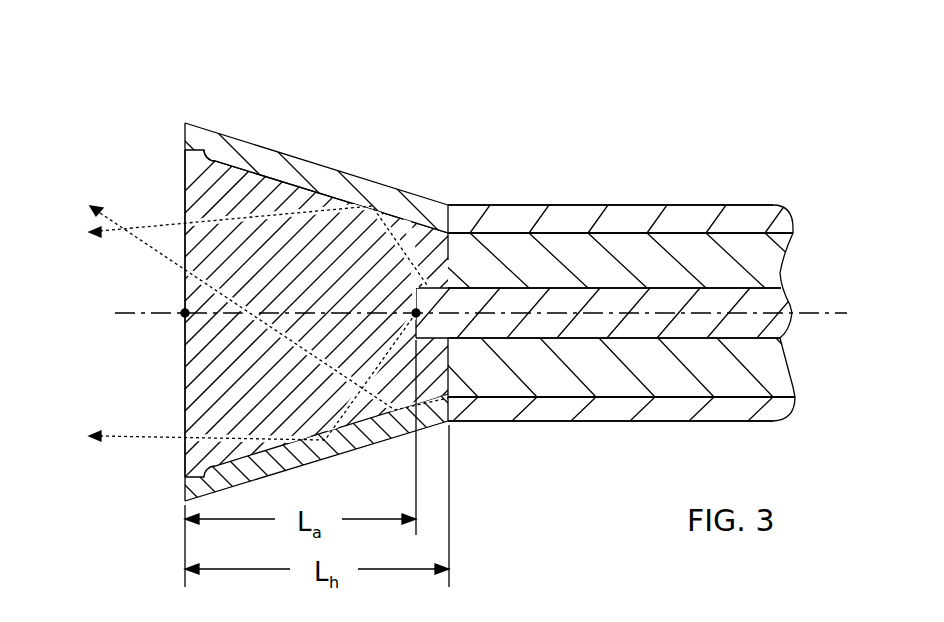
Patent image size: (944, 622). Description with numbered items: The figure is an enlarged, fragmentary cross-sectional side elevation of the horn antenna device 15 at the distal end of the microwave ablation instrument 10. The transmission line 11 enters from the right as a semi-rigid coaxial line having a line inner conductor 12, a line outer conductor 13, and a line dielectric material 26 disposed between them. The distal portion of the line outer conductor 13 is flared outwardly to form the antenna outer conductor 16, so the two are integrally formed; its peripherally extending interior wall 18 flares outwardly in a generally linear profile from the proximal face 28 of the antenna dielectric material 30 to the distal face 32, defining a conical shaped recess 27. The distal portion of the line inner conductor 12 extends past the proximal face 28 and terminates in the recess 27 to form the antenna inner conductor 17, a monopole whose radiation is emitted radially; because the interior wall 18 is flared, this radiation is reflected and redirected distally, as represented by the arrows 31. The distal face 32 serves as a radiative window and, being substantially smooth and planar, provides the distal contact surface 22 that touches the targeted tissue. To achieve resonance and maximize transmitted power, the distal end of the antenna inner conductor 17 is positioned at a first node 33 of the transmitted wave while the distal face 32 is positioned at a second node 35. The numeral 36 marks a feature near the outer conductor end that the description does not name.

The microwave ablation instrument 10 is at (565, 114).
The transmission line 11 is at (620, 206).
The line inner conductor 12 is at (747, 207).
The line outer conductor 13 is at (742, 287).
The line dielectric material 26 is at (788, 372).
The horn antenna device 15 is at (244, 141).
The antenna outer conductor 16 is at (300, 168).
The antenna inner conductor 17 is at (446, 262).
The interior wall 18 is at (212, 150).
The conical shaped recess 27 is at (213, 478).
The proximal face 28 is at (448, 362).
The antenna dielectric material 30 is at (210, 402).
The arrows 31 is at (160, 222).
The distal face 32 is at (185, 350).
The distal contact surface 22 is at (185, 350).
The first node 33 is at (416, 310).
The second node 35 is at (184, 312).
The corner 36 is at (443, 212).